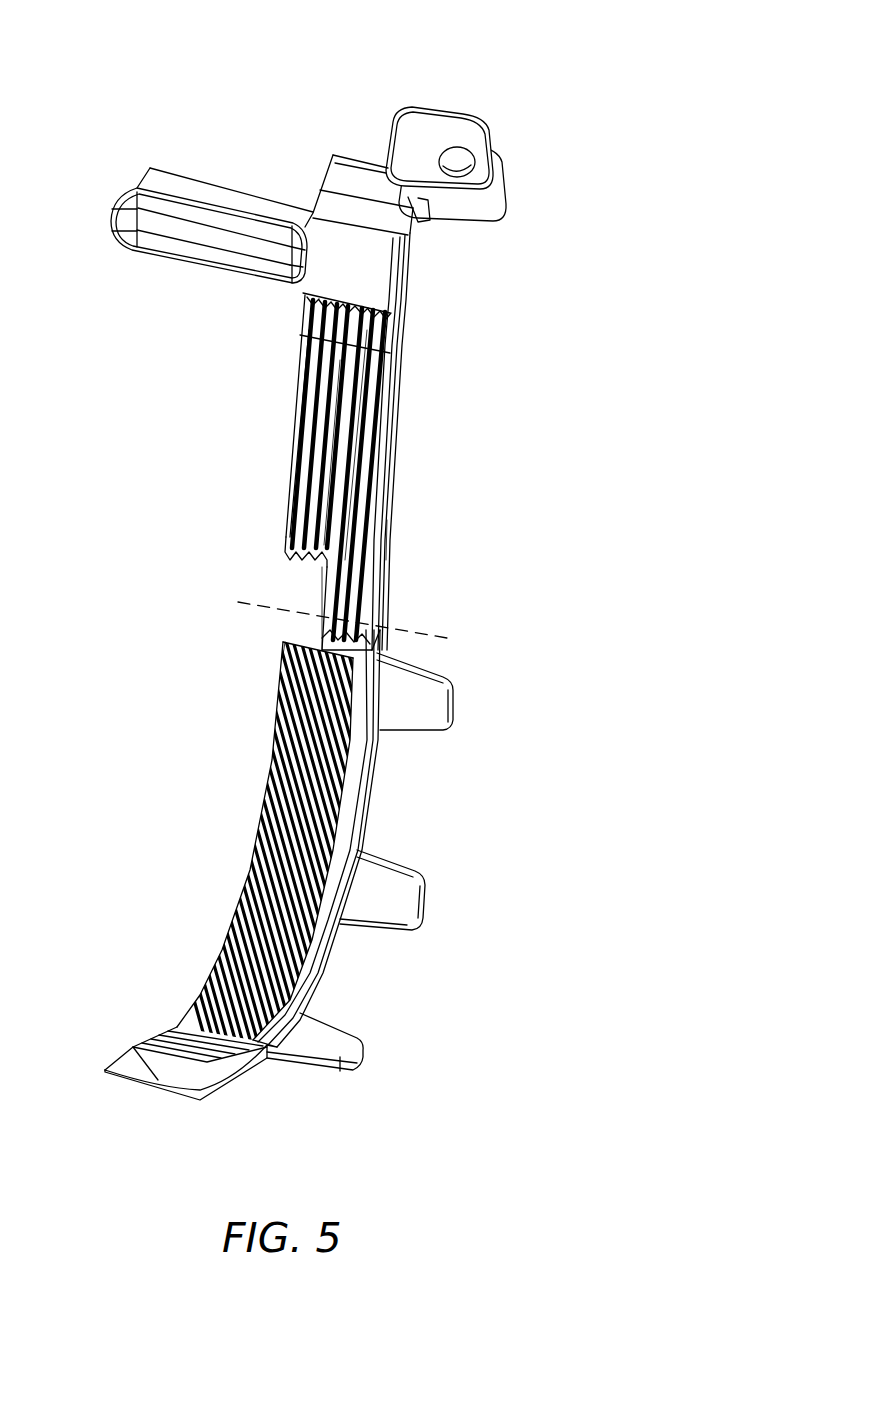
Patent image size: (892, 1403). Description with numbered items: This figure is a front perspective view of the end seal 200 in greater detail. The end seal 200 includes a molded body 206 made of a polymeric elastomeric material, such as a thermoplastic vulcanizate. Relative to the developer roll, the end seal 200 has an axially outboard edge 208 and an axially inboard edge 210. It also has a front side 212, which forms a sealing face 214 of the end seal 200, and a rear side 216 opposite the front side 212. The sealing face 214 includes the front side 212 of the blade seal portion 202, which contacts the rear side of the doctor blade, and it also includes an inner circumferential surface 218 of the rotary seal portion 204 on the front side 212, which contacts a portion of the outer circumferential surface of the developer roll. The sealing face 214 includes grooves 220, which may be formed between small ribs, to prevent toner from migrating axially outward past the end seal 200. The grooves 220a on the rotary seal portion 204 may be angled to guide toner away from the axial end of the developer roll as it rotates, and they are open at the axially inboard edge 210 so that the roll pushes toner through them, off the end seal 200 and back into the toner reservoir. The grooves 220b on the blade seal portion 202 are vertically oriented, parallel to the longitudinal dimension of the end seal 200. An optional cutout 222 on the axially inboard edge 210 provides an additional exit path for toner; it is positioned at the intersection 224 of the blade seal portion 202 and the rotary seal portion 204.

The end seal 200 is at (545, 102).
The blade seal portion 202 is at (290, 447).
The rotary seal portion 204 is at (265, 818).
The body 206 is at (367, 823).
The axially outboard edge 208 is at (392, 468).
The axially inboard edge 210 is at (297, 378).
The front side 212 is at (368, 375).
The sealing face 214 is at (347, 512).
The rear side 216 is at (387, 540).
The inner circumferential surface 218 is at (270, 940).
The grooves 220 is at (307, 855).
The grooves on rotary seal portion 220a is at (340, 775).
The grooves on blade seal portion 220b is at (373, 420).
The cutout 222 is at (288, 587).
The intersection 224 is at (415, 633).